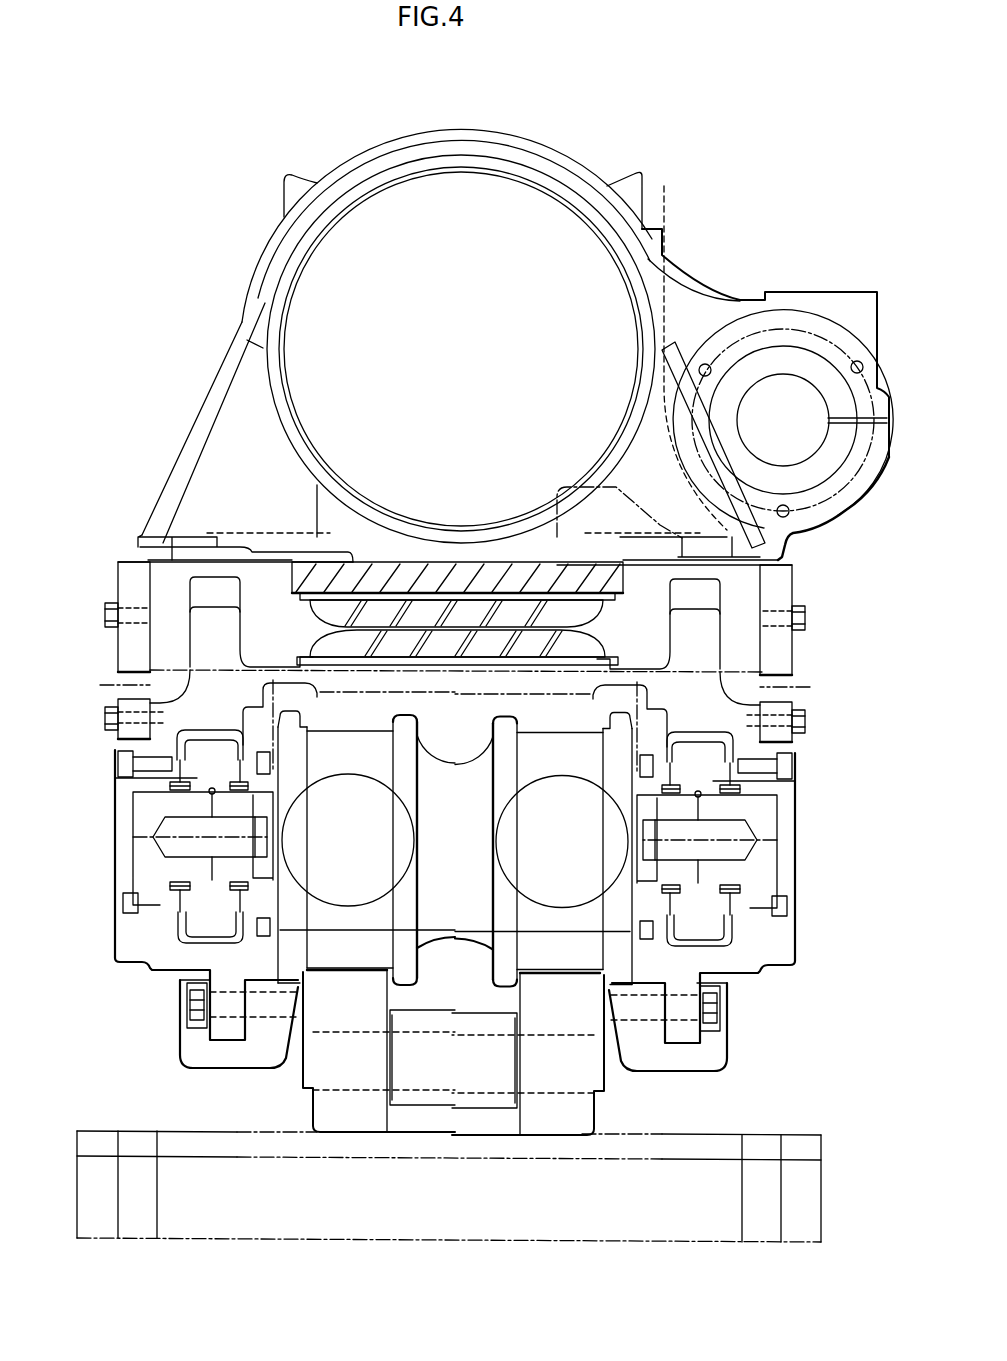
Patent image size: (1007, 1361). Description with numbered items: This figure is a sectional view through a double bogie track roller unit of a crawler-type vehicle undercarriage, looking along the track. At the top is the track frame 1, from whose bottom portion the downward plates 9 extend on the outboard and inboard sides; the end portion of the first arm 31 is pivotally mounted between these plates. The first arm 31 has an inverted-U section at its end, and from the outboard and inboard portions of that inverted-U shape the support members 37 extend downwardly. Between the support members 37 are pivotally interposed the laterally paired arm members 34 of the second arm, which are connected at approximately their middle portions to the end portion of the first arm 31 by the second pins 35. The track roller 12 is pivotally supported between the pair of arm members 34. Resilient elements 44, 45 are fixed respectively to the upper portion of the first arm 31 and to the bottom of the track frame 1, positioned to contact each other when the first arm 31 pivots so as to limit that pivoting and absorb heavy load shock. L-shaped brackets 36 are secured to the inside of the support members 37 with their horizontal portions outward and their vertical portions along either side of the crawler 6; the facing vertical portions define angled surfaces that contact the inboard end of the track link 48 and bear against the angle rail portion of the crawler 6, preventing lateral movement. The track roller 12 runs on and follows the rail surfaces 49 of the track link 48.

The track frame 1 is at (273, 236).
The crawler 6 is at (180, 1130).
The downward plate 9 is at (120, 650).
The track roller 12 is at (340, 753).
The first arm 31 is at (200, 707).
The arm member 34 is at (160, 780).
The second pin 35 is at (175, 868).
The bracket 36 is at (190, 1057).
The support member 37 is at (170, 955).
The resilient element 44 is at (330, 635).
The resilient element 45 is at (333, 620).
The track link 48 is at (322, 1103).
The rail surface 49 is at (345, 960).